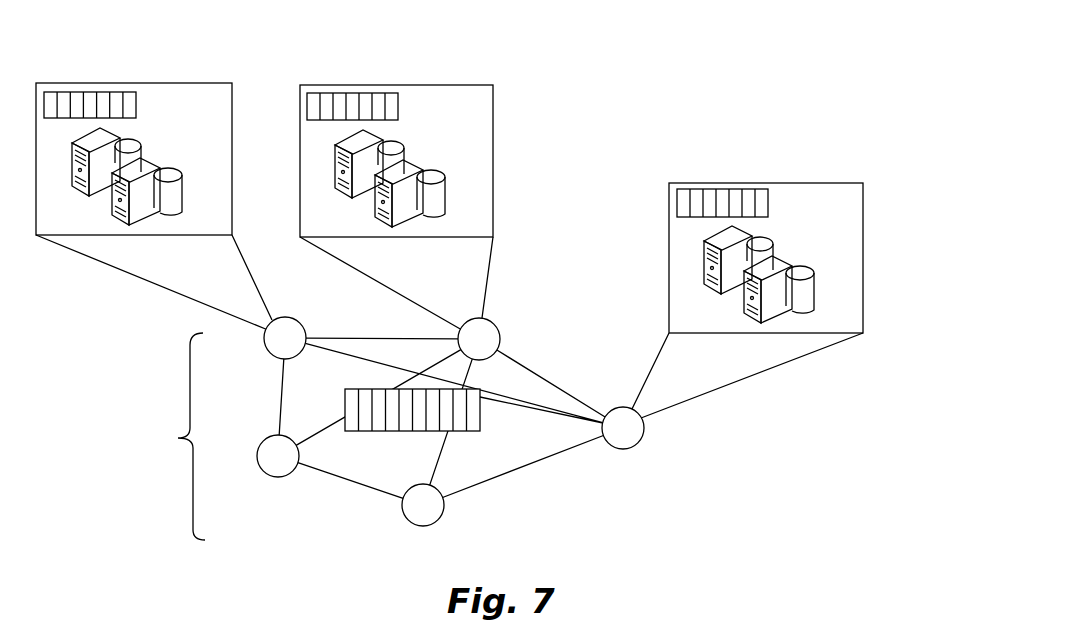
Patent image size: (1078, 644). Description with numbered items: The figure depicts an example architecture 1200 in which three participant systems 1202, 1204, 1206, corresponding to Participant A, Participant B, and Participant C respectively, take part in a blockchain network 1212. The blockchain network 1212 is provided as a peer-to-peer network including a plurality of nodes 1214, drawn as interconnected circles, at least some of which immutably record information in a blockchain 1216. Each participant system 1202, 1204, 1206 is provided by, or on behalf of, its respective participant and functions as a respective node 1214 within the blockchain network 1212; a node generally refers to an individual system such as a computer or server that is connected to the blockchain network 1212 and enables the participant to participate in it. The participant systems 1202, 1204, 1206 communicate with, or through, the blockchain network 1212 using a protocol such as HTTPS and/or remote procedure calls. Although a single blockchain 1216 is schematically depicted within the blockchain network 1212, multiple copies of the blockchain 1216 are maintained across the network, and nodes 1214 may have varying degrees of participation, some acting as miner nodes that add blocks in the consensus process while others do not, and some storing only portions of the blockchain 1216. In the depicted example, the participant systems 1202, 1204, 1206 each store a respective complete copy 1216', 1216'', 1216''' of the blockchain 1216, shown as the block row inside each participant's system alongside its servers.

The example architecture 1200 is at (825, 60).
The participant system 1202 is at (232, 83).
The participant system 1204 is at (493, 85).
The participant system 1206 is at (863, 183).
The blockchain network 1212 is at (162, 436).
The node 1214 is at (303, 325).
The blockchain 1216 is at (412, 434).
The copy of the blockchain 1216' is at (134, 78).
The copy of the blockchain 1216'' is at (394, 80).
The copy of the blockchain 1216''' is at (766, 179).